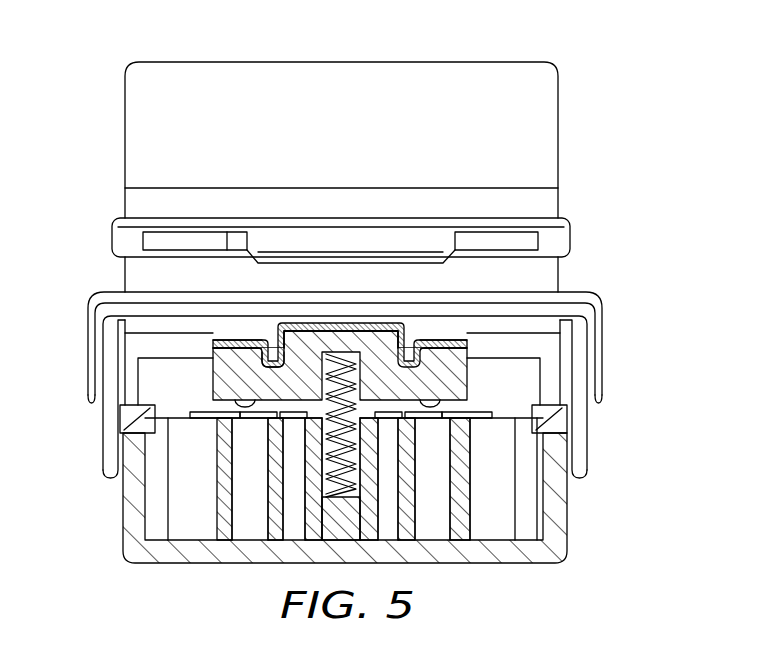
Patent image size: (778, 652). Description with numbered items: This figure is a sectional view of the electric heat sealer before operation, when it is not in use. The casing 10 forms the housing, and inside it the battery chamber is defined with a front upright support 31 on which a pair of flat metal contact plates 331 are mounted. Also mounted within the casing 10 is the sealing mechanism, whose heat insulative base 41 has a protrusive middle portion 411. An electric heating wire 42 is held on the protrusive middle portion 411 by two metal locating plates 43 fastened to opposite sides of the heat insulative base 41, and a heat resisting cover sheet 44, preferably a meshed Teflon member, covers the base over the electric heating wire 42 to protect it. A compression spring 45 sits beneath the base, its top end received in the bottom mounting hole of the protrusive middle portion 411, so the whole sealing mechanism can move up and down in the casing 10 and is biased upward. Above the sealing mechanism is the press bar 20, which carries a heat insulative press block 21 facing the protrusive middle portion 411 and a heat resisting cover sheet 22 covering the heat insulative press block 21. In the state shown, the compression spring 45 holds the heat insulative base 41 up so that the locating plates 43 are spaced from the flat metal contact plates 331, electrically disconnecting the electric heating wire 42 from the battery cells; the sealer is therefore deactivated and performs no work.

The casing 10 is at (133, 512).
The press bar 20 is at (447, 62).
The heat insulative press block 21 is at (430, 243).
The heat resisting cover sheet 22 is at (443, 262).
The front upright support 31 is at (465, 522).
The flat metal contact plates 331 is at (200, 407).
The heat insulative base 41 is at (470, 395).
The protrusive middle portion 411 is at (400, 325).
The electric heating wire 42 is at (264, 338).
The metal locating plates 43 is at (470, 378).
The heat resisting cover sheet 44 is at (290, 325).
The compression spring 45 is at (360, 447).